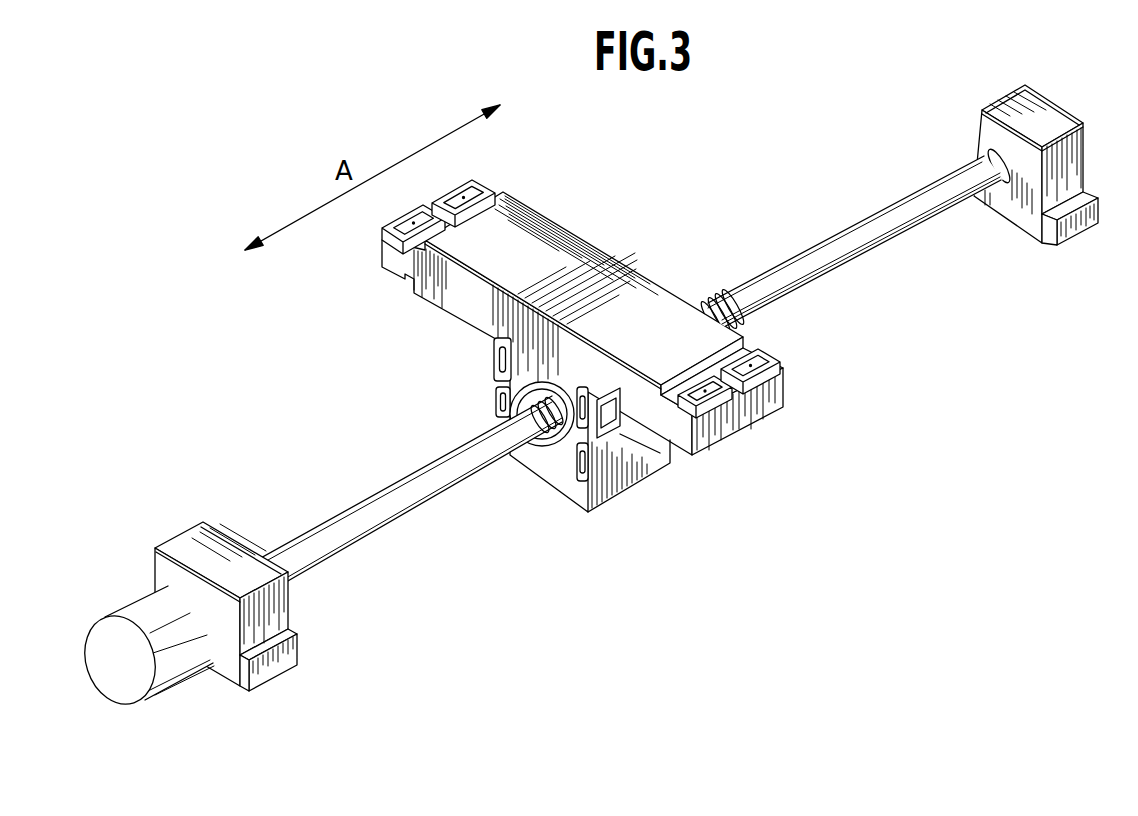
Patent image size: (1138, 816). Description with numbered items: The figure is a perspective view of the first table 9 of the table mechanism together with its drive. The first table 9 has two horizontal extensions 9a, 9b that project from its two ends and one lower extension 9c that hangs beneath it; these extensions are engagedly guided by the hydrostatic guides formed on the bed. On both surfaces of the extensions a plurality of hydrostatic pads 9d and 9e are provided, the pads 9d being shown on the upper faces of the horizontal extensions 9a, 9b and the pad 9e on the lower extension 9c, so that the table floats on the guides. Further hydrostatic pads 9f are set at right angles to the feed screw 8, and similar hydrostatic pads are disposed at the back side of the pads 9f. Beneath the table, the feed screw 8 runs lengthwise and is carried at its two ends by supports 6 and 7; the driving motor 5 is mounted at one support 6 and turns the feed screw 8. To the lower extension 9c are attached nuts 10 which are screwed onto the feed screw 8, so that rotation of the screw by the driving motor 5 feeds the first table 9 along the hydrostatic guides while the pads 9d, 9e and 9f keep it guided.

The driving motor 5 is at (113, 626).
The support 6 is at (194, 537).
The support 7 is at (1070, 174).
The feed screw 8 is at (345, 524).
The first table 9 is at (632, 290).
The horizontal extension 9a is at (726, 422).
The horizontal extension 9b is at (384, 256).
The lower extension 9c is at (624, 482).
The hydrostatic pads 9d is at (468, 182).
The hydrostatic pads 9e is at (632, 436).
The hydrostatic pads 9f is at (492, 366).
The nuts 10 is at (553, 458).